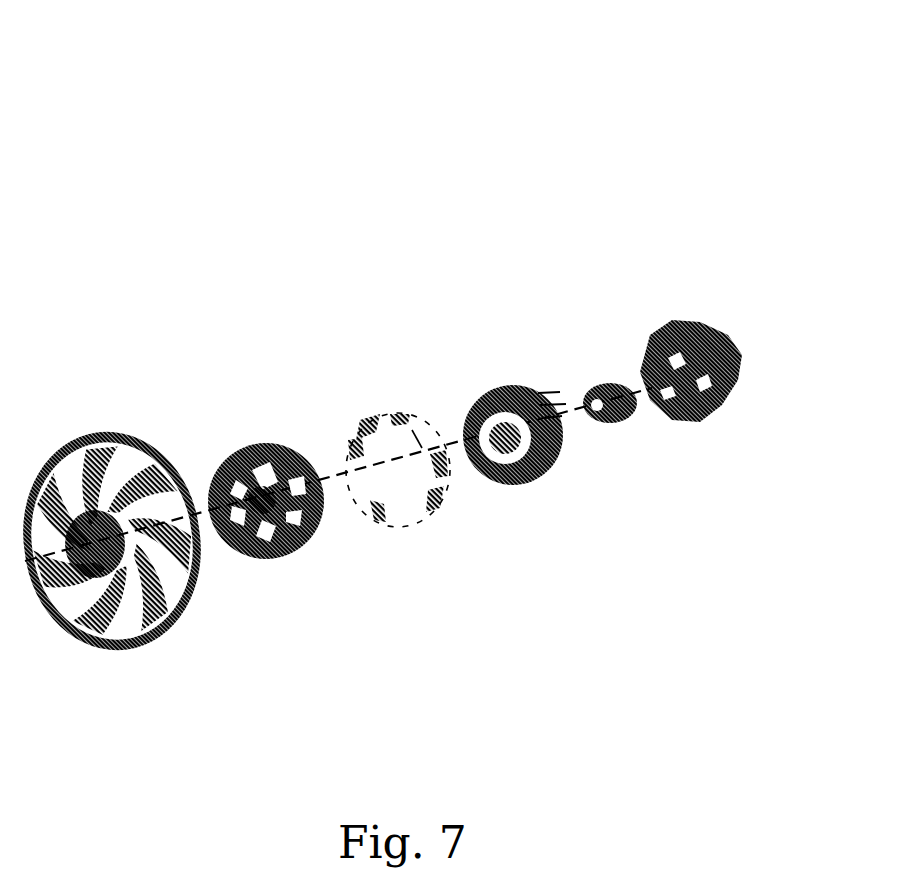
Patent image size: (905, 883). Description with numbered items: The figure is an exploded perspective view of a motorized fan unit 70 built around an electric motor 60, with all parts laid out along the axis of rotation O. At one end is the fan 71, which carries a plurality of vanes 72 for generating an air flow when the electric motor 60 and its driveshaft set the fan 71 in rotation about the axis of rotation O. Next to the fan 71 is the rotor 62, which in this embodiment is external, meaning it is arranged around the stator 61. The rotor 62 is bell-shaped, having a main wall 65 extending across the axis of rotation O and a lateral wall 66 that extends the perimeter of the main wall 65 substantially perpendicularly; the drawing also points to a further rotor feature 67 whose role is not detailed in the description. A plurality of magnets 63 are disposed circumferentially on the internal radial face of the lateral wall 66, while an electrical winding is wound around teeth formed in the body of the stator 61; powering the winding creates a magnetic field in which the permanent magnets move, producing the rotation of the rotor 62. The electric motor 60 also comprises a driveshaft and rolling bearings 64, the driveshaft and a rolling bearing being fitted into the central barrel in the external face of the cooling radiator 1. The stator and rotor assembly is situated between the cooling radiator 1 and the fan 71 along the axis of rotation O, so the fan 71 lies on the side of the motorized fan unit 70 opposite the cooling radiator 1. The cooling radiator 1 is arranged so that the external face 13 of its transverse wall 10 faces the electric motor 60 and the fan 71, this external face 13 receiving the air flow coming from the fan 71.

The motorized fan unit 70 is at (192, 148).
The electric motor 60 is at (153, 326).
The fan 71 is at (112, 526).
The vanes 72 is at (117, 488).
The axis of rotation O is at (206, 520).
The rotor 62 is at (268, 483).
The main wall 65 is at (268, 483).
The lateral wall 66 is at (280, 483).
The rotor opening 67 is at (318, 450).
The magnets 63 is at (407, 522).
The stator 61 is at (502, 383).
The rolling bearings 64 is at (608, 415).
The cooling radiator 1 is at (707, 408).
The transverse wall 10 is at (707, 458).
The external face 13 is at (668, 400).